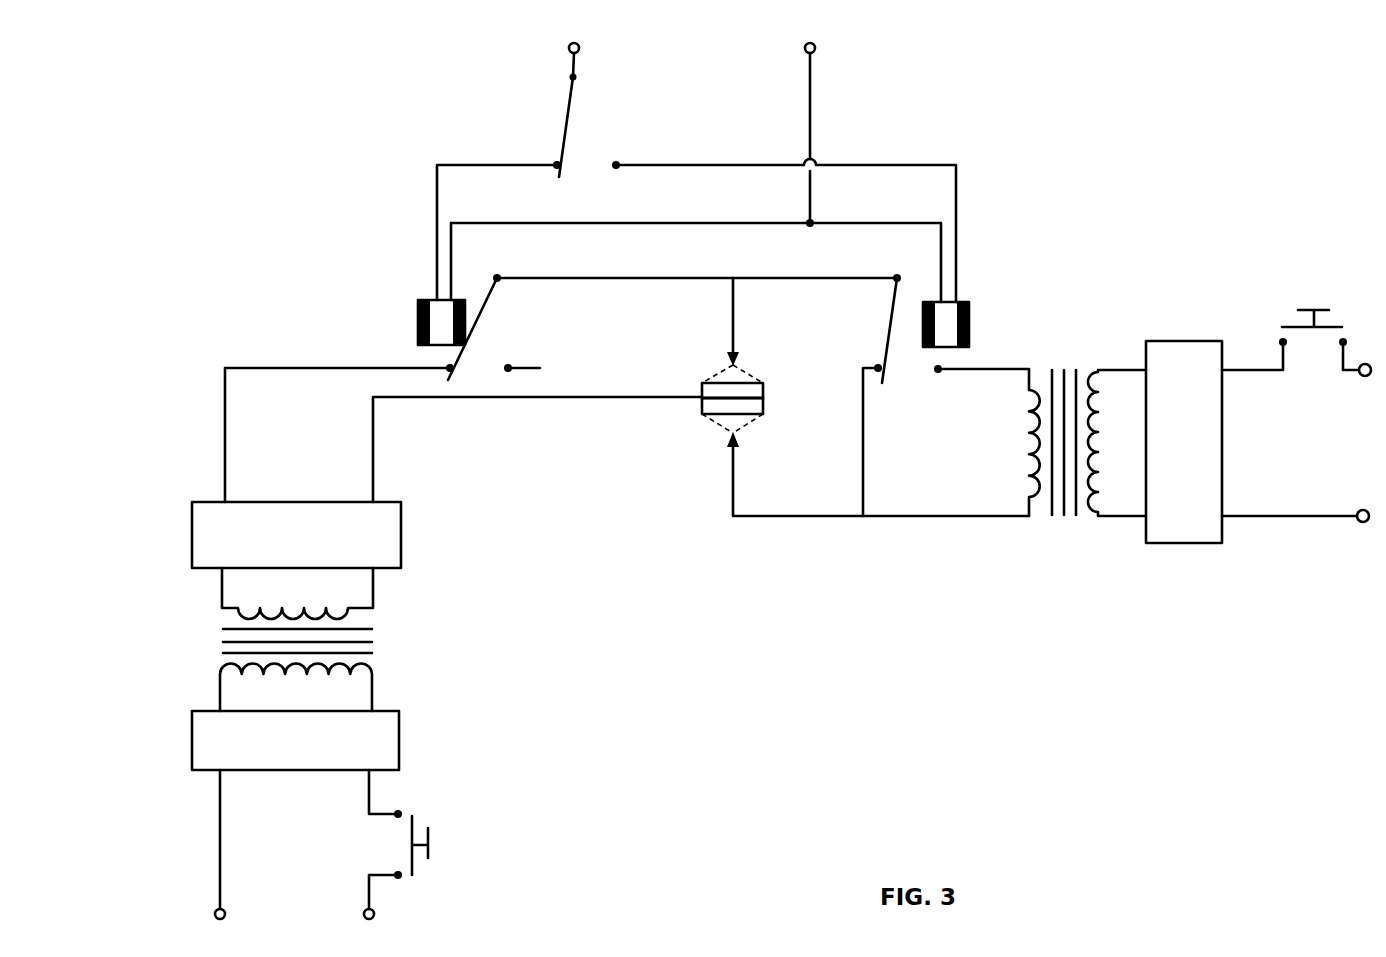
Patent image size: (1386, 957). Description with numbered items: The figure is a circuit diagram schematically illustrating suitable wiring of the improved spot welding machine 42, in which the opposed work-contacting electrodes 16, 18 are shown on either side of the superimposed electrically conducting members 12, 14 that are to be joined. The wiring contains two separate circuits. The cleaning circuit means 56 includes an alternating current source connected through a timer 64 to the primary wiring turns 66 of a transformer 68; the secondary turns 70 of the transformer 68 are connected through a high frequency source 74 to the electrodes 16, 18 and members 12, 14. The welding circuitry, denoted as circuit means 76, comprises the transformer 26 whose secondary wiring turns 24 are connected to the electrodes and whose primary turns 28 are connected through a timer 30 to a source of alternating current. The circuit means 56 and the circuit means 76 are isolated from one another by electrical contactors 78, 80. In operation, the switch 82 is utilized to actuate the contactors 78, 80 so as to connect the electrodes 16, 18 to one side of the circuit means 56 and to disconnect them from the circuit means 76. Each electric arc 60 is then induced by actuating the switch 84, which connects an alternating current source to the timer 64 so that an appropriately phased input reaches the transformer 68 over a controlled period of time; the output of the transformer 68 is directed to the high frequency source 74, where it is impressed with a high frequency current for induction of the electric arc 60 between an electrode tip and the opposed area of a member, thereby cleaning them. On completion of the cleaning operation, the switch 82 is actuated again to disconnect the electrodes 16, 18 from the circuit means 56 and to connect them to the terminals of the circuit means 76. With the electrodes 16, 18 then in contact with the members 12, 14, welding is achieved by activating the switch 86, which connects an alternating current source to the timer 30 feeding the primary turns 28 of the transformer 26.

The electrically conducting member 12 is at (763, 390).
The electrically conducting member 14 is at (763, 405).
The work-contacting electrode 16 is at (740, 352).
The work-contacting electrode 18 is at (733, 447).
The secondary wiring turns 24 is at (1027, 516).
The transformer 26 is at (1078, 340).
The primary turns 28 is at (1100, 516).
The timer 30 is at (1180, 543).
The improved spot welding machine 42 is at (873, 550).
The circuit means 56 is at (439, 645).
The electric arc 60 is at (725, 372).
The timer 64 is at (401, 738).
The primary wiring turns 66 is at (430, 661).
The transformer 68 is at (375, 638).
The secondary turns 70 is at (373, 602).
The high frequency source 74 is at (402, 533).
The circuit means 76 is at (1122, 539).
The electrical contactor 78 is at (418, 318).
The electrical contactor 80 is at (972, 318).
The switch 82 is at (562, 123).
The switch 84 is at (432, 840).
The switch 86 is at (1308, 307).